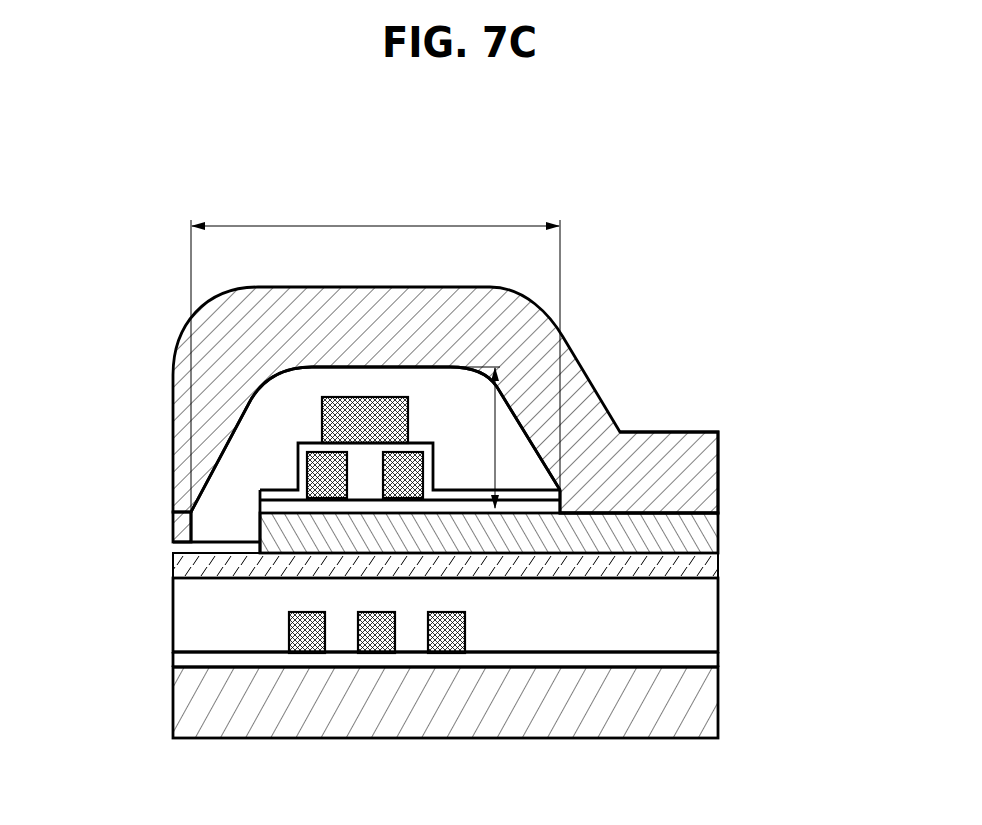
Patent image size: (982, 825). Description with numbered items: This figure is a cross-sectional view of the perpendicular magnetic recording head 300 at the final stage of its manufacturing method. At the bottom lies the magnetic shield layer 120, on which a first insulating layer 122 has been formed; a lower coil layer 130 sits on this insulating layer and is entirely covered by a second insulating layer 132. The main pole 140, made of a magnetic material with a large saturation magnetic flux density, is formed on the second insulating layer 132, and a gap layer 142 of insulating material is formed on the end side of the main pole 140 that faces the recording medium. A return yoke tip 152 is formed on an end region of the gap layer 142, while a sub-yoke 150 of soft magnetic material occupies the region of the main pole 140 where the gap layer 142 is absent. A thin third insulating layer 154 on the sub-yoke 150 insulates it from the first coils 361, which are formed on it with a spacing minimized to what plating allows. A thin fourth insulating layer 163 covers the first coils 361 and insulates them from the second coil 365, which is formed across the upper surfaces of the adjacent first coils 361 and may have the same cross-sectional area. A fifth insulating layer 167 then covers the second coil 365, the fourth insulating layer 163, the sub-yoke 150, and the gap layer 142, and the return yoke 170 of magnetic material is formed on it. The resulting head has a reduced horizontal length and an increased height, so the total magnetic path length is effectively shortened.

The perpendicular magnetic recording head 300 is at (695, 288).
The magnetic shield layer 120 is at (704, 708).
The first insulating layer 122 is at (700, 660).
The lower coil layer 130 is at (312, 655).
The second insulating layer 132 is at (700, 623).
The main pole 140 is at (704, 568).
The gap layer 142 is at (180, 548).
The sub-yoke 150 is at (704, 535).
The return yoke tip 152 is at (180, 525).
The third insulating layer 154 is at (530, 507).
The fourth insulating layer 163 is at (527, 488).
The fifth insulating layer 167 is at (227, 485).
The return yoke 170 is at (557, 367).
The first coils 361 is at (397, 460).
The second coil 365 is at (340, 395).